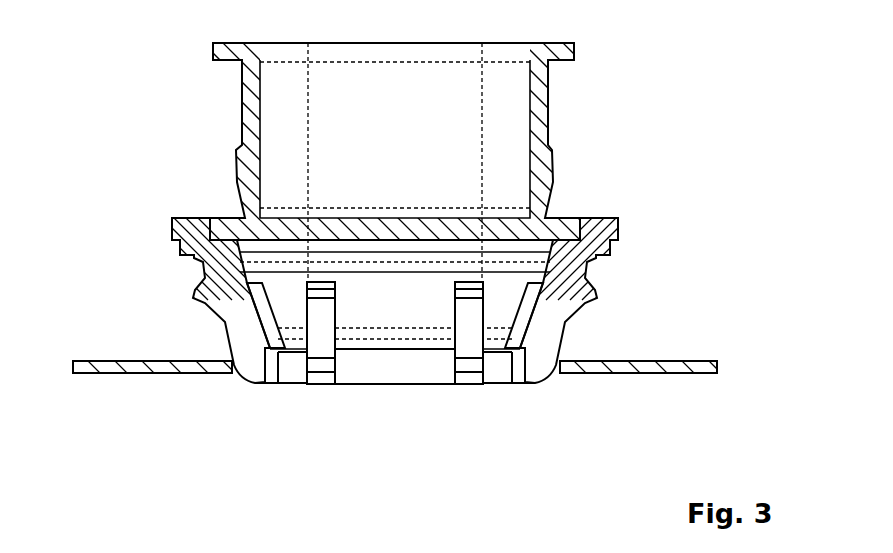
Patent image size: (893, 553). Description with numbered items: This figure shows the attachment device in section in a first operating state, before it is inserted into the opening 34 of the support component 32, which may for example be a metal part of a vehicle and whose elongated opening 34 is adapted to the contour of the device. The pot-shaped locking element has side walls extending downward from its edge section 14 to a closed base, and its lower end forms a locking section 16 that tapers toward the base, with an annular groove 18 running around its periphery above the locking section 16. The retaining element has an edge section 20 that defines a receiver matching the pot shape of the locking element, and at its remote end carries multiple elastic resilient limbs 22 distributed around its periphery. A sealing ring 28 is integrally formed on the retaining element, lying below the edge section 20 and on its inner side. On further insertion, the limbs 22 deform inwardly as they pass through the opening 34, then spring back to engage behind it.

The edge section 14 is at (566, 46).
The locking section 16 is at (550, 200).
The annular groove 18 is at (247, 158).
The edge section 20 is at (607, 232).
The elastic resilient limbs 22 is at (553, 330).
The sealing ring 28 is at (195, 252).
The support component 32 is at (446, 251).
The opening 34 is at (203, 363).